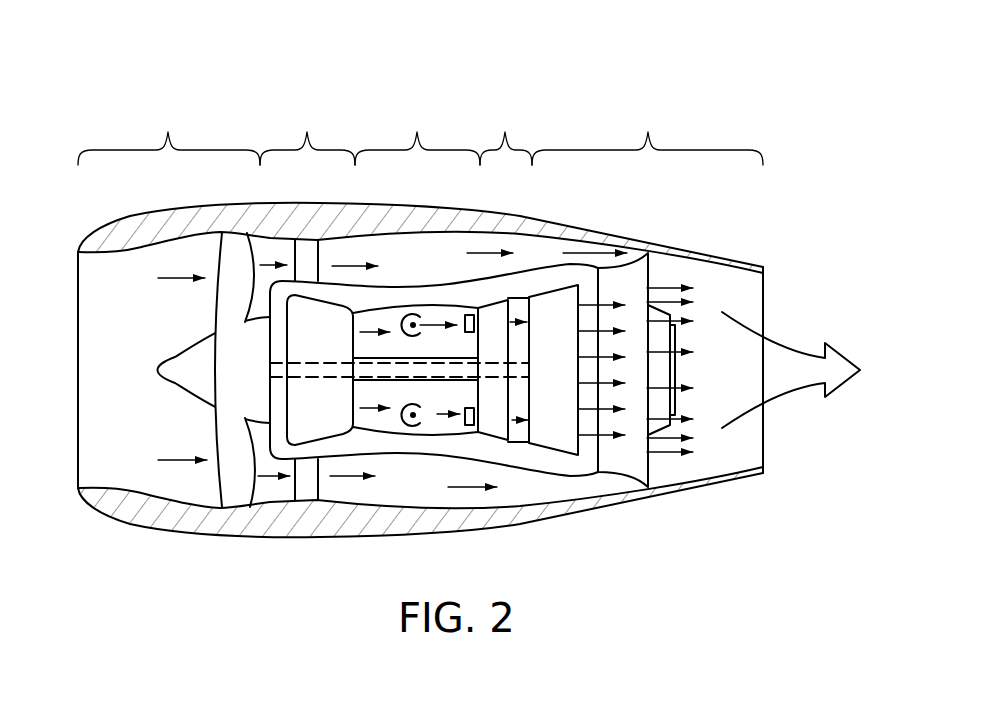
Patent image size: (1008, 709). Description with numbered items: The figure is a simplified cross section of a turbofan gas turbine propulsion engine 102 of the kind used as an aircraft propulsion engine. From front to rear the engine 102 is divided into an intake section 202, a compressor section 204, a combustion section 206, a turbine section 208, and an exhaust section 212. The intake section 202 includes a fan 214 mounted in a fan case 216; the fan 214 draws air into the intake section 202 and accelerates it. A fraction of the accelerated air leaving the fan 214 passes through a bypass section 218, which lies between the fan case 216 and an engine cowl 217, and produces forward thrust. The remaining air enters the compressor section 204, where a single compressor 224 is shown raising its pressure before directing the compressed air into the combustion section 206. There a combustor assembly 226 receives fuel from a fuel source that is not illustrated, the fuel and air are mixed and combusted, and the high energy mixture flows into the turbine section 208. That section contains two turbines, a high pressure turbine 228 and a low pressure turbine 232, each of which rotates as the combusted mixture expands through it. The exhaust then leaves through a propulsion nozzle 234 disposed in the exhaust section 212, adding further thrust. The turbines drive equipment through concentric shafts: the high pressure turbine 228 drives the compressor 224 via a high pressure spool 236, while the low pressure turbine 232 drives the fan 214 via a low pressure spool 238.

The gas turbine engine 102 is at (777, 113).
The intake section 202 is at (169, 134).
The compressor section 204 is at (307, 134).
The combustion section 206 is at (417, 134).
The turbine section 208 is at (506, 134).
The exhaust section 212 is at (647, 134).
The fan 214 is at (214, 370).
The fan case 216 is at (225, 535).
The engine cowl 217 is at (447, 285).
The bypass section 218 is at (423, 242).
The compressor 224 is at (382, 370).
The combustor assembly 226 is at (411, 316).
The high pressure turbine 228 is at (497, 313).
The low pressure turbine 232 is at (553, 313).
The propulsion nozzle 234 is at (767, 295).
The high pressure spool 236 is at (428, 382).
The low pressure spool 238 is at (400, 373).